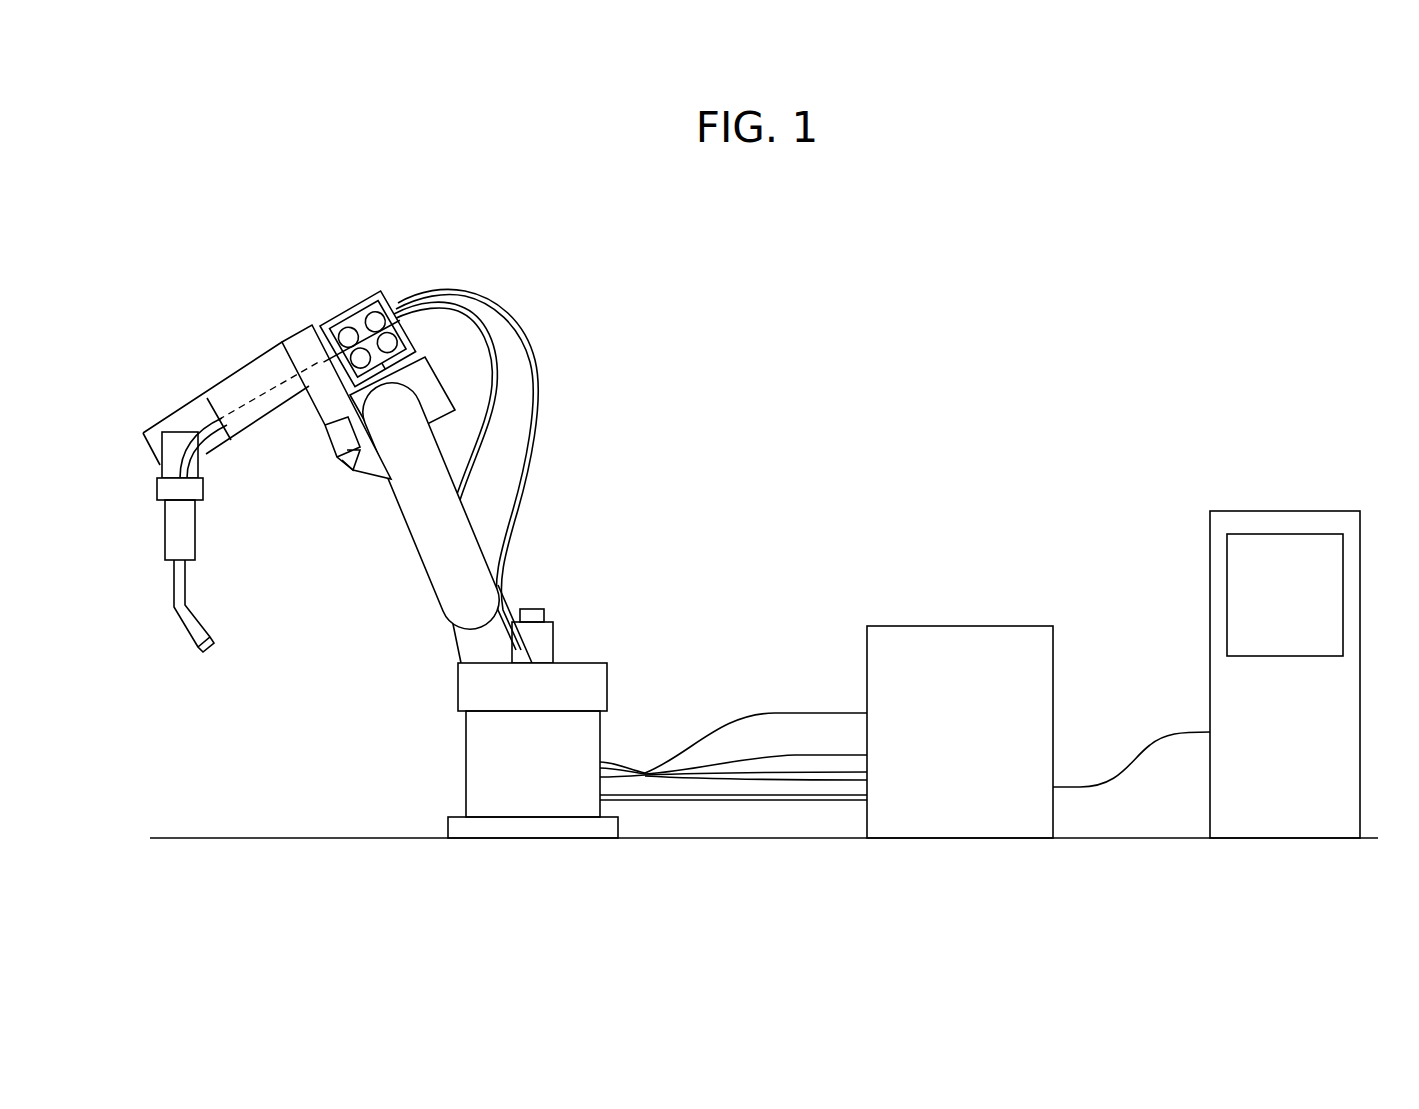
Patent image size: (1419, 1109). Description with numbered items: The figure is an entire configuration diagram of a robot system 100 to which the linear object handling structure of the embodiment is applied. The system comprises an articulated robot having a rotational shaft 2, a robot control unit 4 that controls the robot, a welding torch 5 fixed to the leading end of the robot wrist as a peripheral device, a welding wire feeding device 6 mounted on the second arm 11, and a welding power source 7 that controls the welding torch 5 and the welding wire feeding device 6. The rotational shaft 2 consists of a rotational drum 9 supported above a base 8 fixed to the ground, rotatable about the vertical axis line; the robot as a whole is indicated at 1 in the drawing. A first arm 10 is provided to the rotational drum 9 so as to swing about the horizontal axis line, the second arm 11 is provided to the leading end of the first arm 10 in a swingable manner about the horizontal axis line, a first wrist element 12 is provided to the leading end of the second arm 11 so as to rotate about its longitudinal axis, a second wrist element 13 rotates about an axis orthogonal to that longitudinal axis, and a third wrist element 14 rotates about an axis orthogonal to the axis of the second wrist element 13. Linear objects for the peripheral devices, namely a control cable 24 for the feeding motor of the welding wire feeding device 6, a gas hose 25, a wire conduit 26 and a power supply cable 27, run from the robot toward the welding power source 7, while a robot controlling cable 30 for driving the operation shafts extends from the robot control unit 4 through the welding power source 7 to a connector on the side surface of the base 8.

The robot system 100 is at (976, 300).
The welding robot 1 is at (374, 650).
The rotational shaft 2 is at (390, 668).
The base 8 is at (466, 752).
The rotational drum 9 is at (458, 691).
The first arm 10 is at (396, 504).
The second arm 11 is at (440, 378).
The first wrist element 12 is at (240, 384).
The second wrist element 13 is at (198, 458).
The third wrist element 14 is at (157, 483).
The welding torch 5 is at (183, 627).
The welding wire feeding device 6 is at (333, 302).
The welding power source 7 is at (954, 612).
The robot control unit 4 is at (1276, 498).
The control cable 24 is at (792, 778).
The gas hose 25 is at (838, 773).
The wire conduit 26 is at (798, 753).
The power supply cable 27 is at (722, 720).
The robot controlling cable 30 is at (678, 802).